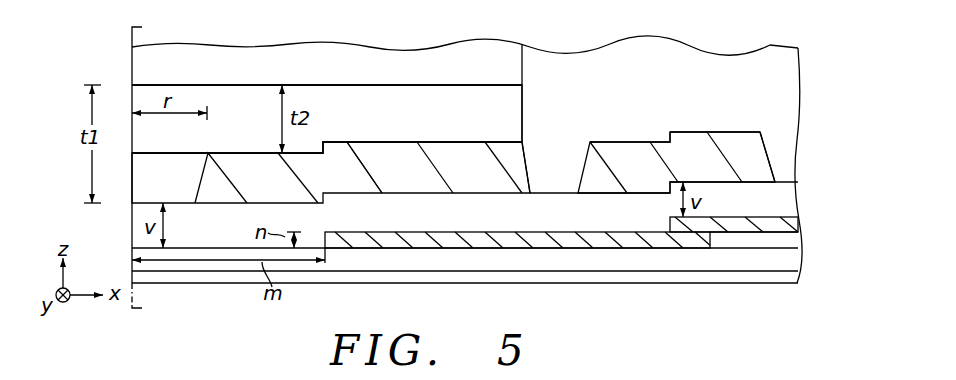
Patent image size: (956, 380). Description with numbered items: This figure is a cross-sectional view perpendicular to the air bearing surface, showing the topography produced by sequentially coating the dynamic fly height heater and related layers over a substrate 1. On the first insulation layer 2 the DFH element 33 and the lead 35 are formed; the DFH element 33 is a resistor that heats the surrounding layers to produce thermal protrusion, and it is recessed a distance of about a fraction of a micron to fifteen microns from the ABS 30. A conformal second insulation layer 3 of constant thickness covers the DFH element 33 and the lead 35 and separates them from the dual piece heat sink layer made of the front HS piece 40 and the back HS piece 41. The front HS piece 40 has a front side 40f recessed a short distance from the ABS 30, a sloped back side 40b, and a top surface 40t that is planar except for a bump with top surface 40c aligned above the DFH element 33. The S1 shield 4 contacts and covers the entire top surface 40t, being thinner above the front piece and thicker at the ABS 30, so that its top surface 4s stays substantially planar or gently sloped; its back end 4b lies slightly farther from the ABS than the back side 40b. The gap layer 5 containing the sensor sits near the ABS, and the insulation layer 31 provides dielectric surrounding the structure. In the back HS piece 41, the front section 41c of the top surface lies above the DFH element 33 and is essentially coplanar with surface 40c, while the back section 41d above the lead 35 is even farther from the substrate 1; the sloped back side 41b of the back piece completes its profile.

The substrate 1 is at (793, 278).
The first insulation layer 2 is at (793, 262).
The second insulation layer 3 is at (795, 203).
The S1 shield 4 is at (447, 113).
The top surface of the S1 shield 4s is at (380, 85).
The back end of the S1 shield 4b is at (522, 97).
The gap layer 5 is at (142, 70).
The ABS 30 is at (148, 169).
The insulation layer 31 is at (793, 67).
The DFH element 33 is at (358, 248).
The lead 35 is at (753, 230).
The front HS piece 40 is at (478, 187).
The top surface of the front HS piece 40t is at (255, 153).
The top surface of the topography feature 40c is at (350, 142).
The front side of the front HS piece 40f is at (202, 168).
The back side of the front HS piece 40b is at (533, 192).
The back HS piece 41 is at (753, 152).
The back surface of second element layer 41b is at (773, 175).
The front section of the top surface of the back piece 41c is at (638, 142).
The back section of the top surface of the back piece 41d is at (732, 130).